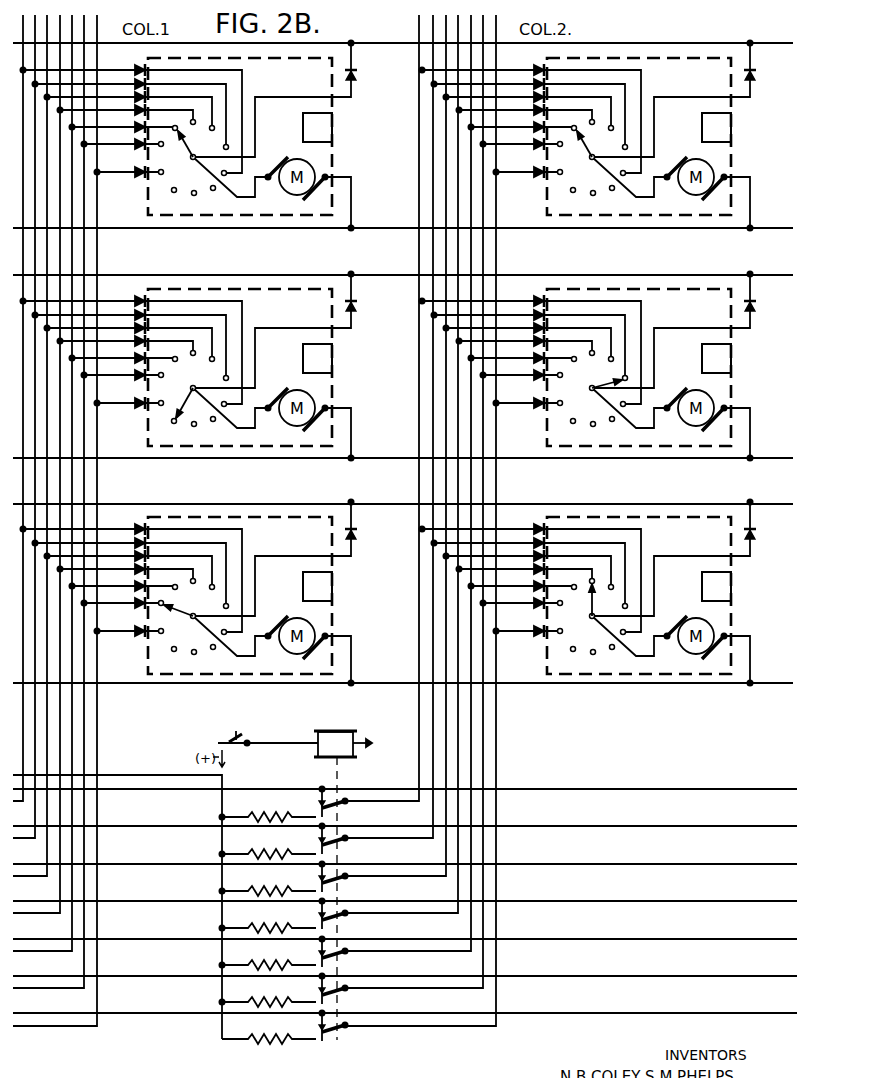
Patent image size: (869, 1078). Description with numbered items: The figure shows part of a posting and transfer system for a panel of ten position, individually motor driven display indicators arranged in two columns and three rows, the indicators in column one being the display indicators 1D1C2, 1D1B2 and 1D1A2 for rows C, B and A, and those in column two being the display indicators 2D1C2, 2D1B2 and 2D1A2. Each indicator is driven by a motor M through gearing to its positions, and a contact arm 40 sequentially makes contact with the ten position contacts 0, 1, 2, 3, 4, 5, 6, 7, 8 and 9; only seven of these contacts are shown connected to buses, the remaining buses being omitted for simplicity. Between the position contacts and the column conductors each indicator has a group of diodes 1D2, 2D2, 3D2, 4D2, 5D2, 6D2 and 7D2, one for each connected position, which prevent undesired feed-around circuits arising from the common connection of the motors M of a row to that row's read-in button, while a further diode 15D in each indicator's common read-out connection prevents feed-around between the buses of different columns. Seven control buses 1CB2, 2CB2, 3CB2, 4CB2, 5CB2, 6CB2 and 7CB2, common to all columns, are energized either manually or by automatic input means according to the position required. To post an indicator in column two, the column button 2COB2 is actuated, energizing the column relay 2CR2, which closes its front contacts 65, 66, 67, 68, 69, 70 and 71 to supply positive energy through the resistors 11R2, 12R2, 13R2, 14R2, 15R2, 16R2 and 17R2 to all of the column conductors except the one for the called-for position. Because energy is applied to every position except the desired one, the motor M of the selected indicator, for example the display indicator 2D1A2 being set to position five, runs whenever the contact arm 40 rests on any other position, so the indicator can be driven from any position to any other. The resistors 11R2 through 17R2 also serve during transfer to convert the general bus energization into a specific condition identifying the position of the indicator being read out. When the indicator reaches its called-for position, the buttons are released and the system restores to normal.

The diode 7D2 is at (331, 342).
The diode 6D2 is at (329, 339).
The diode 5D2 is at (328, 339).
The diode 4D2 is at (325, 346).
The diode 3D2 is at (322, 363).
The diode 2D2 is at (321, 381).
The diode 1D2 is at (327, 412).
The diode 15D is at (567, 309).
The display indicator 1D1C2 is at (332, 157).
The display indicator 1D1B2 is at (332, 388).
The display indicator 1D1A2 is at (332, 616).
The display indicator 2D1C2 is at (733, 148).
The display indicator 2D1B2 is at (733, 379).
The display indicator 2D1A2 is at (733, 607).
The contact arm 40 is at (189, 158).
The position contact 0 is at (370, 428).
The position contact 1 is at (99, 676).
The position contact 2 is at (87, 847).
The position contact 3 is at (75, 810).
The position contact 4 is at (62, 766).
The position contact 5 is at (49, 752).
The position contact 6 is at (37, 733).
The position contact 7 is at (25, 715).
The position contact 8 is at (416, 427).
The position contact 9 is at (392, 432).
The column button 2COB2 is at (264, 730).
The column relay 2CR2 is at (337, 730).
The resistor 17R2 is at (250, 815).
The resistor 16R2 is at (250, 852).
The resistor 15R2 is at (250, 889).
The resistor 14R2 is at (250, 926).
The resistor 13R2 is at (250, 963).
The resistor 12R2 is at (250, 1000).
The resistor 11R2 is at (250, 1037).
The front contact 71 is at (341, 806).
The front contact 70 is at (341, 843).
The front contact 69 is at (341, 881).
The front contact 68 is at (341, 918).
The front contact 67 is at (341, 956).
The front contact 66 is at (341, 993).
The front contact 65 is at (341, 1030).
The control bus 7CB2 is at (727, 789).
The control bus 6CB2 is at (727, 826).
The control bus 5CB2 is at (727, 864).
The control bus 4CB2 is at (727, 901).
The control bus 3CB2 is at (727, 939).
The control bus 2CB2 is at (727, 976).
The control bus 1CB2 is at (727, 1013).